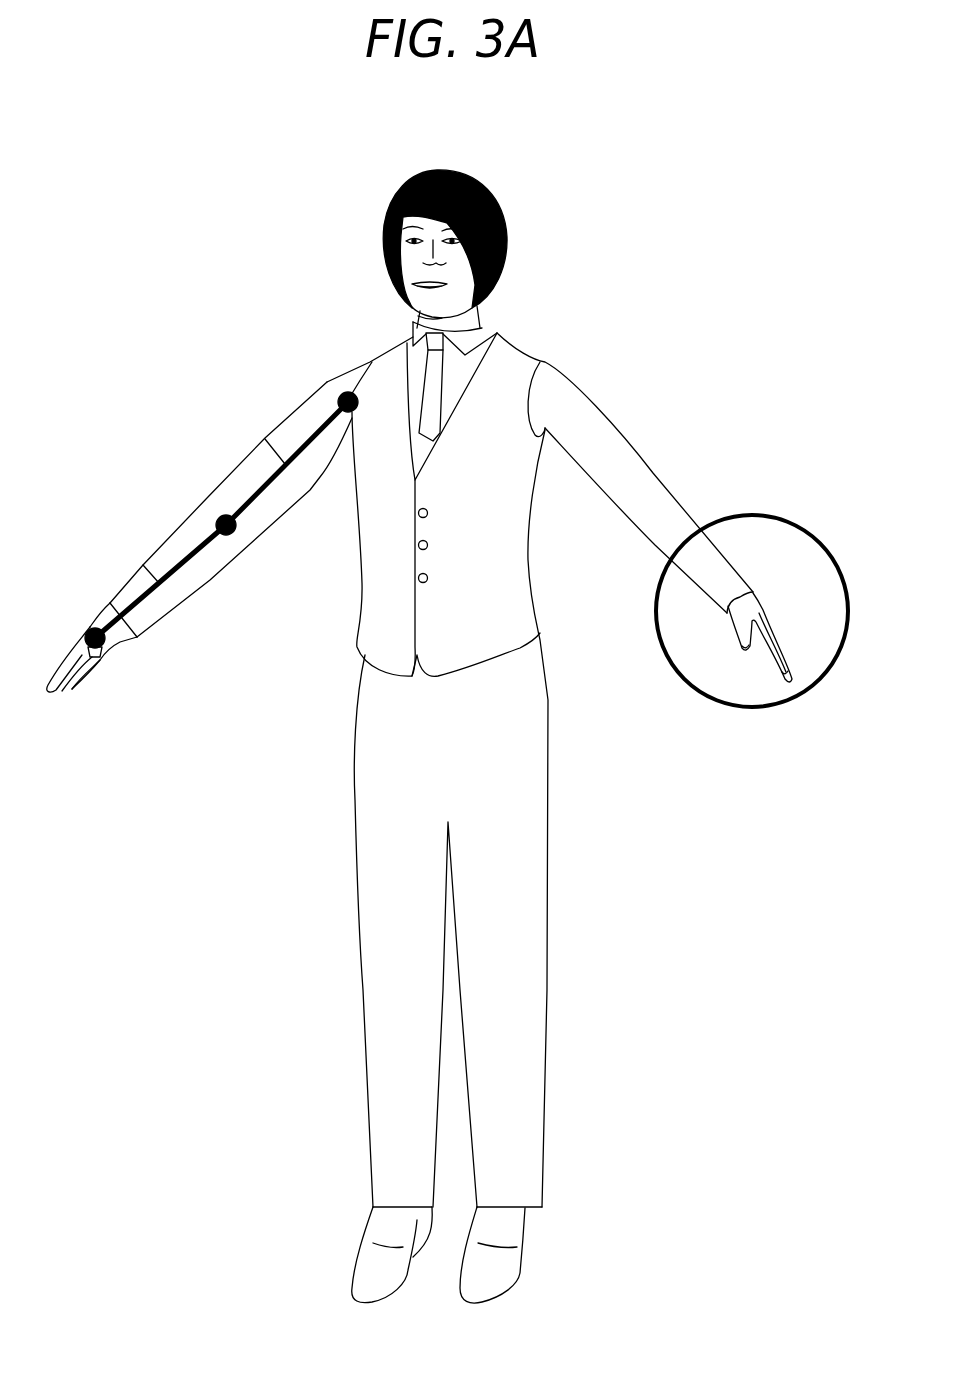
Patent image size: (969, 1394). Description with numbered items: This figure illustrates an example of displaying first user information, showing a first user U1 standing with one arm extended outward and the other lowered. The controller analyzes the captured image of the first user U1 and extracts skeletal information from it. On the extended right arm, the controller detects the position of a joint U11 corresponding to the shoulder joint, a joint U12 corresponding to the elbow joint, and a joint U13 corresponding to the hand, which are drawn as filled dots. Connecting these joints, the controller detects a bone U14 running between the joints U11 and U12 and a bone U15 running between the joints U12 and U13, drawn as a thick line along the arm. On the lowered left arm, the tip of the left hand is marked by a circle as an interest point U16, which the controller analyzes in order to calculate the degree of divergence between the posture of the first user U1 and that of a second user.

The first user U1 is at (518, 146).
The joint U11 is at (327, 382).
The joint U12 is at (207, 503).
The joint U13 is at (90, 627).
The bone U14 is at (265, 438).
The bone U15 is at (143, 565).
The interest point U16 is at (773, 515).